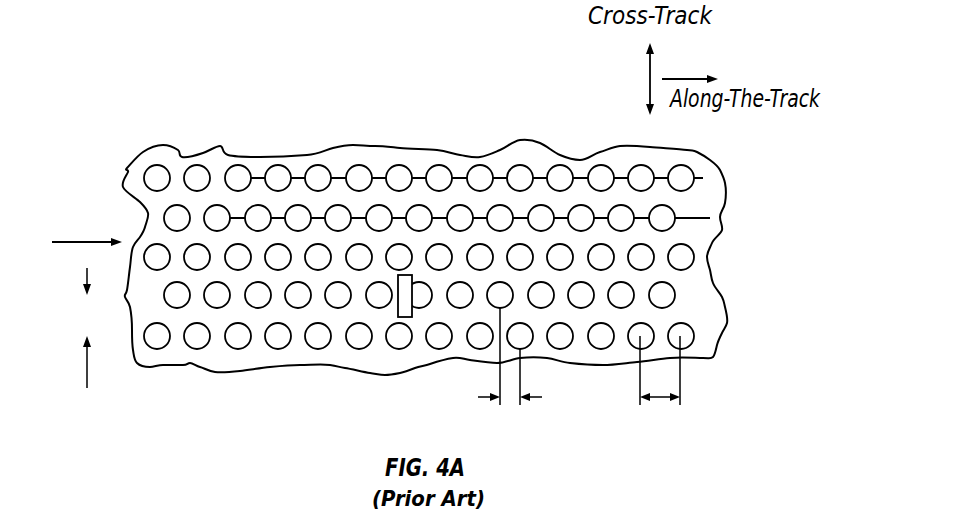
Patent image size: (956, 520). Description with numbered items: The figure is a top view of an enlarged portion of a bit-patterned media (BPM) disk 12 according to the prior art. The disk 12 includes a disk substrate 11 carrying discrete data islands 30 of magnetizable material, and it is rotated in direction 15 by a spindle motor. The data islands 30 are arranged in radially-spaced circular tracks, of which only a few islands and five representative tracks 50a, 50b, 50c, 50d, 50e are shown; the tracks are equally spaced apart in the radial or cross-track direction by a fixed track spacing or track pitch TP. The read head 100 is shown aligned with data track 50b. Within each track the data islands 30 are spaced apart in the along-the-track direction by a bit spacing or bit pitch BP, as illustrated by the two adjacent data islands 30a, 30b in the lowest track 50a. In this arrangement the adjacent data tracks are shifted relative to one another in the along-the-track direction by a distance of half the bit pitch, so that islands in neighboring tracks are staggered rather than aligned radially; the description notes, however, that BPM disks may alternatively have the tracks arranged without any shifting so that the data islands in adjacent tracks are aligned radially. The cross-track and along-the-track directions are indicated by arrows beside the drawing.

The magnetic recording disk 12 is at (213, 92).
The disk substrate 11 is at (232, 363).
The direction of rotation 15 is at (68, 240).
The data islands 30 is at (318, 165).
The data island 30a is at (640, 350).
The data island 30b is at (683, 349).
The read head 100 is at (405, 318).
The data track 50a is at (444, 350).
The data track 50b is at (444, 339).
The data track 50c is at (63, 257).
The data track 50d is at (63, 218).
The data track 50e is at (444, 153).